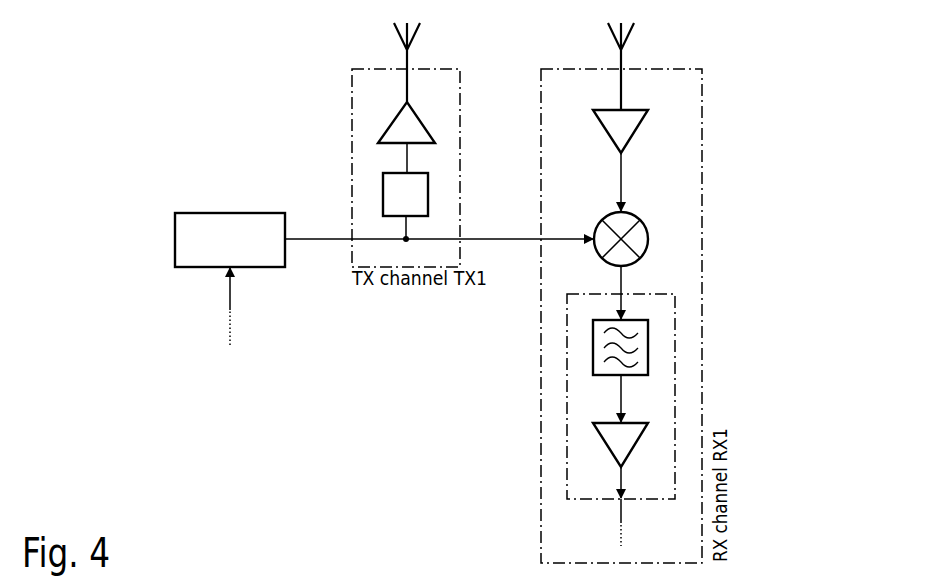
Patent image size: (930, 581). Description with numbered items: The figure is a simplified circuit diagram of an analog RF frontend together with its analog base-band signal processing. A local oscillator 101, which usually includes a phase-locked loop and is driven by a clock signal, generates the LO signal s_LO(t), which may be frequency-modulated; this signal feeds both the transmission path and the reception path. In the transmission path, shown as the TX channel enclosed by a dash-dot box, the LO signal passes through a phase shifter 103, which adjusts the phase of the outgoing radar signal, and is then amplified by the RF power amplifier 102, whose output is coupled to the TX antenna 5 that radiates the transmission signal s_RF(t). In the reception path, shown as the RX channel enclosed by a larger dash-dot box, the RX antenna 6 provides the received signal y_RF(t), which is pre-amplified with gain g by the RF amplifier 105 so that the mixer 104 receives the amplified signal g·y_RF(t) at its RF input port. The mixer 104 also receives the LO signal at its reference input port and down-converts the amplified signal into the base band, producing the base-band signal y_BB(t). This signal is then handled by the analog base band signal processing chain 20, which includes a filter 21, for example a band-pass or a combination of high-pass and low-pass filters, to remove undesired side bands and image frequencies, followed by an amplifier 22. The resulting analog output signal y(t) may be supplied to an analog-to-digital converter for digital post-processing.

The TX antenna 5 is at (390, 42).
The RF power amplifier 102 is at (390, 138).
The phase shifter 103 is at (387, 173).
The local oscillator 101 is at (222, 213).
The RX antenna 6 is at (632, 42).
The RF amplifier 105 is at (640, 125).
The mixer 104 is at (648, 232).
The band-pass filter 21 is at (593, 350).
The amplifier 22 is at (605, 445).
The analog base band signal processing chain 20 is at (566, 485).